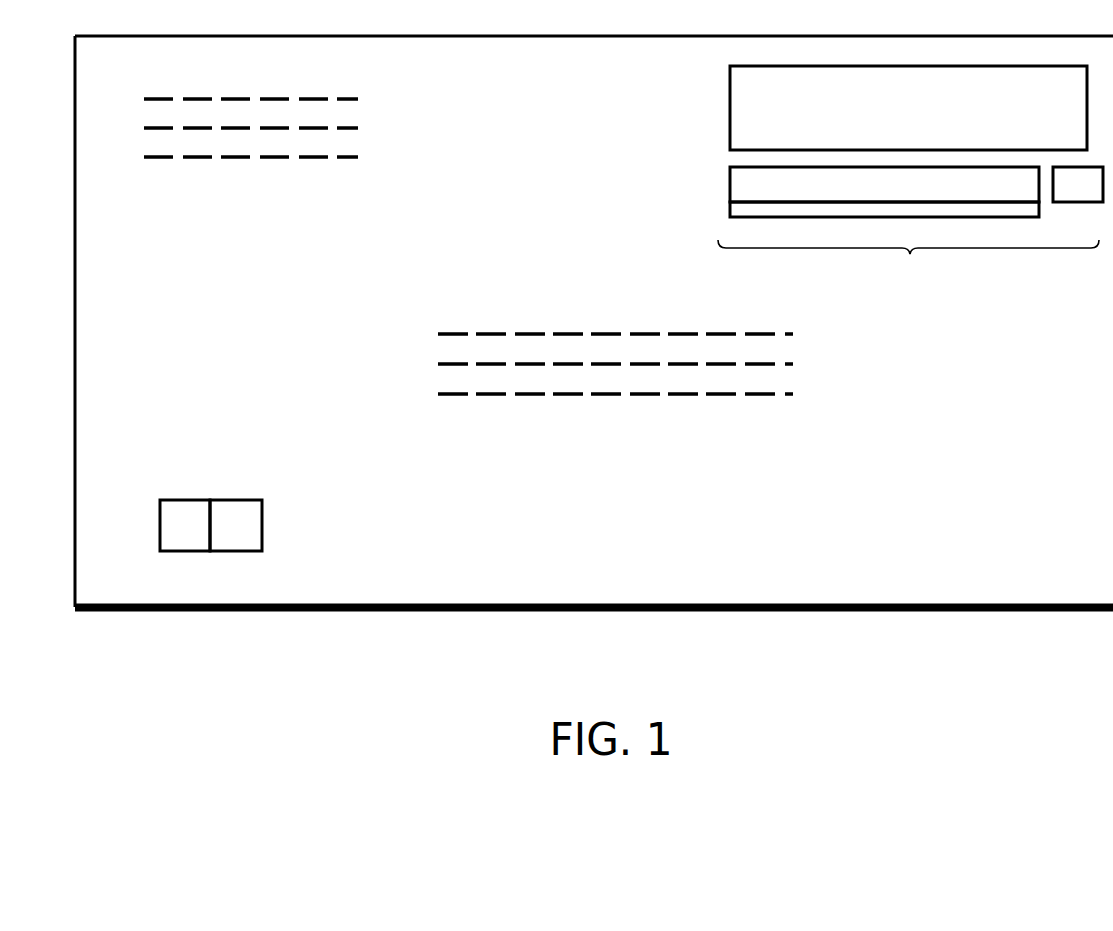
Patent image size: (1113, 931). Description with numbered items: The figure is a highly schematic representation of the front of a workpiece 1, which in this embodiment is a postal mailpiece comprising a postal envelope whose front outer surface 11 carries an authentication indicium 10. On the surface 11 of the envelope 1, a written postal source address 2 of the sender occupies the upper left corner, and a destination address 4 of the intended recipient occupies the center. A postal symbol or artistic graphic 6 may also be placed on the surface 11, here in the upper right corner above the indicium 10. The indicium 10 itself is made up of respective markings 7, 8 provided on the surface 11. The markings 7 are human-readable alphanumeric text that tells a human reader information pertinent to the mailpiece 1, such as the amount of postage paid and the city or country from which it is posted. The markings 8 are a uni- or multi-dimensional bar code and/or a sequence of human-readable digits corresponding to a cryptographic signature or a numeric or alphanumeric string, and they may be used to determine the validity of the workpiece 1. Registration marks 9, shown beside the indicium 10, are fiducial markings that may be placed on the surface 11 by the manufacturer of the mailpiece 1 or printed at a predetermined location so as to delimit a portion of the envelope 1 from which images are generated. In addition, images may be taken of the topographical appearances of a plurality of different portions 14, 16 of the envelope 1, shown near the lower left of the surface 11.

The workpiece 1 is at (495, 36).
The front outer surface 11 is at (603, 72).
The postal source address 2 is at (380, 87).
The destination address 4 is at (419, 323).
The postal symbol or artistic graphic 6 is at (730, 96).
The markings 7 is at (730, 212).
The markings 8 is at (730, 176).
The registration marks 9 is at (1086, 202).
The authentication indicium 10 is at (908, 264).
The portion of the envelope 14 is at (176, 551).
The portion of the envelope 16 is at (230, 551).